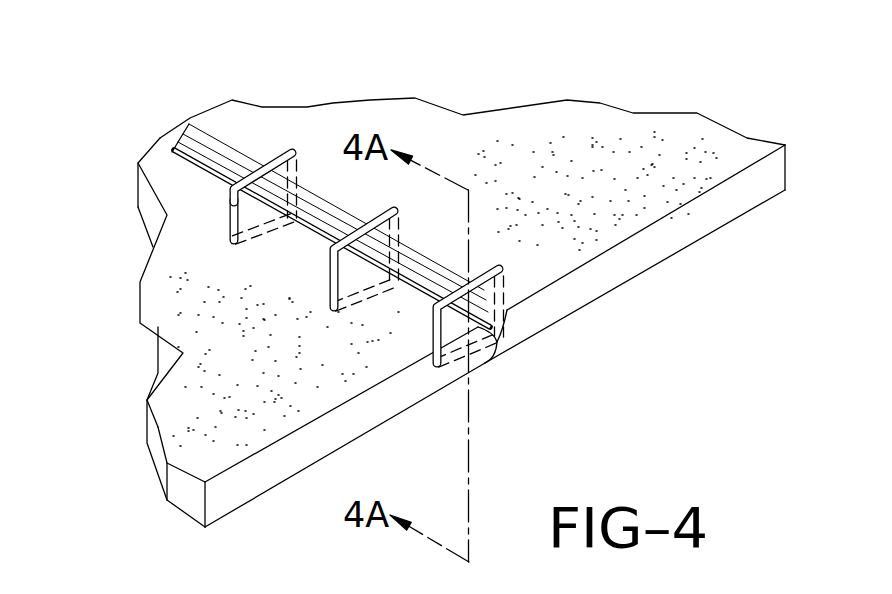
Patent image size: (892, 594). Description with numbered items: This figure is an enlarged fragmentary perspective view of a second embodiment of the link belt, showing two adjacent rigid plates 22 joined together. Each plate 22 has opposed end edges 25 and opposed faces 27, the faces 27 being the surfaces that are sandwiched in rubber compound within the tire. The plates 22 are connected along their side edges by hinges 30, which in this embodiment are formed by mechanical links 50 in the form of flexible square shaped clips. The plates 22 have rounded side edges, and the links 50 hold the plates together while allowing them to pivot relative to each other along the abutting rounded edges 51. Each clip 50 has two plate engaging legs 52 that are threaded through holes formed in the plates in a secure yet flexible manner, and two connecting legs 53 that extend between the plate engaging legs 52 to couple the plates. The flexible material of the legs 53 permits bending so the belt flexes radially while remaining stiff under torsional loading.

The plate 22 is at (513, 120).
The end edge 25 is at (665, 240).
The face 27 is at (598, 148).
The hinge 30 is at (498, 369).
The link 50 is at (376, 191).
The rounded edge 51 is at (192, 126).
The plate engaging leg 52 is at (298, 174).
The connecting leg 53 is at (262, 163).